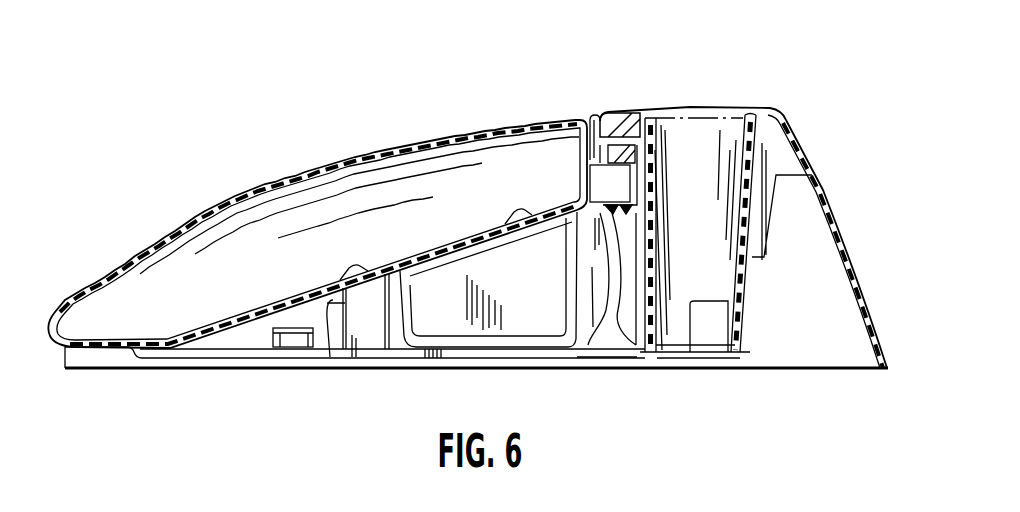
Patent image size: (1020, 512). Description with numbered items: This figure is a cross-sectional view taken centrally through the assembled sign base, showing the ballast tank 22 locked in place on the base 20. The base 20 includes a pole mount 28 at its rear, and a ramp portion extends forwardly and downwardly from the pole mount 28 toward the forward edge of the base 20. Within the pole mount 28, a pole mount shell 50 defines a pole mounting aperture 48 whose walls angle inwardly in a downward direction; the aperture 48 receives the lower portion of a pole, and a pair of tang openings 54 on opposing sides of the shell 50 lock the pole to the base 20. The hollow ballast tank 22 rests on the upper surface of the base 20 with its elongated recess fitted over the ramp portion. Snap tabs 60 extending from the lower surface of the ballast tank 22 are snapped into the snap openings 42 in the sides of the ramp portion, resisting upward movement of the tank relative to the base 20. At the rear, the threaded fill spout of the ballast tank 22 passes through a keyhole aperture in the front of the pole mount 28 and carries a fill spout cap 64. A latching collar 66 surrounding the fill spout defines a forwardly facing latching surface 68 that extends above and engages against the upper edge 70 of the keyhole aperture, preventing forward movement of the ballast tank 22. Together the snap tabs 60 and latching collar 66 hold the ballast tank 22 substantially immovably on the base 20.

The base 20 is at (106, 368).
The ballast tank 22 is at (226, 204).
The pole mount 28 is at (823, 190).
The snap openings 42 is at (307, 340).
The pole mounting aperture 48 is at (713, 132).
The pole mount shell 50 is at (737, 283).
The tang openings 54 is at (713, 343).
The snap tabs 60 is at (285, 340).
The fill spout cap 64 is at (634, 340).
The latching collar 66 is at (620, 214).
The latching surface 68 is at (600, 213).
The upper edge of the keyhole aperture 70 is at (588, 170).